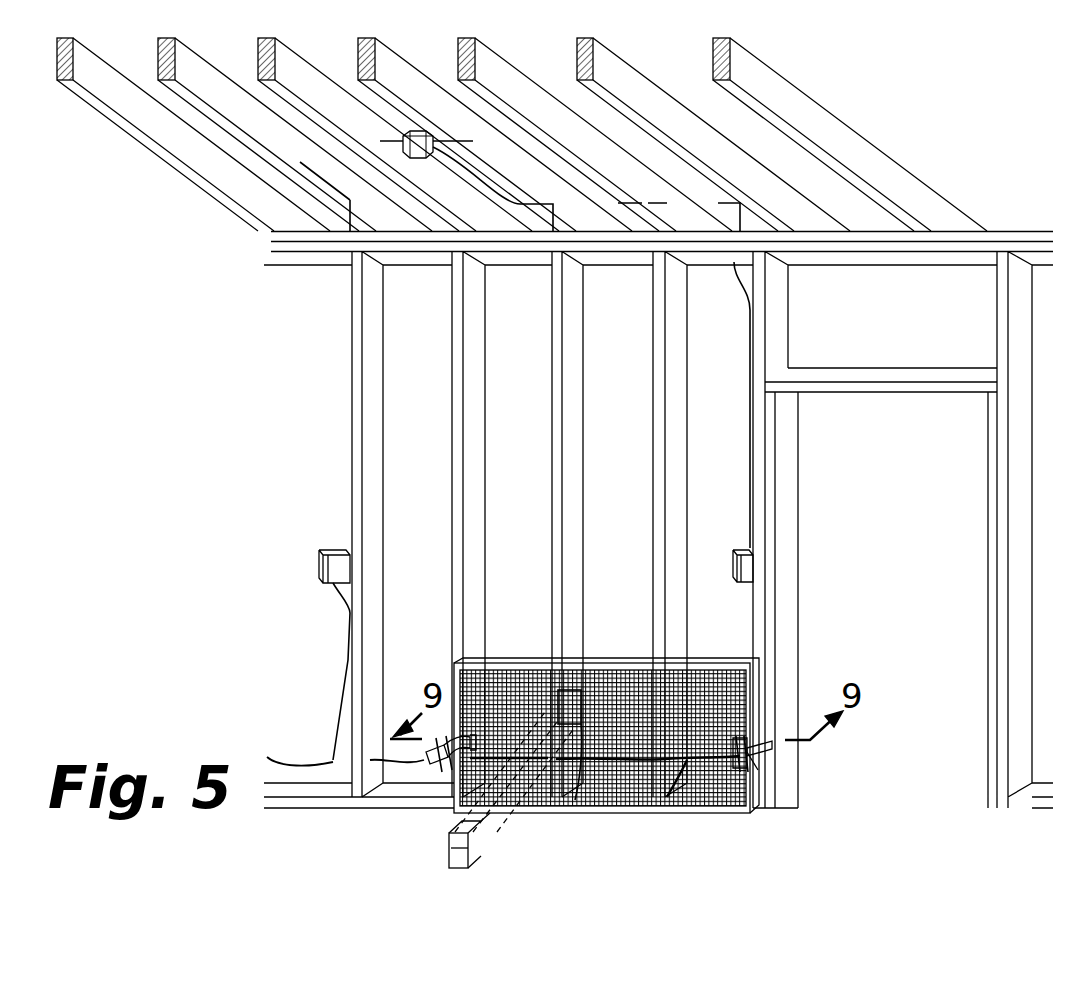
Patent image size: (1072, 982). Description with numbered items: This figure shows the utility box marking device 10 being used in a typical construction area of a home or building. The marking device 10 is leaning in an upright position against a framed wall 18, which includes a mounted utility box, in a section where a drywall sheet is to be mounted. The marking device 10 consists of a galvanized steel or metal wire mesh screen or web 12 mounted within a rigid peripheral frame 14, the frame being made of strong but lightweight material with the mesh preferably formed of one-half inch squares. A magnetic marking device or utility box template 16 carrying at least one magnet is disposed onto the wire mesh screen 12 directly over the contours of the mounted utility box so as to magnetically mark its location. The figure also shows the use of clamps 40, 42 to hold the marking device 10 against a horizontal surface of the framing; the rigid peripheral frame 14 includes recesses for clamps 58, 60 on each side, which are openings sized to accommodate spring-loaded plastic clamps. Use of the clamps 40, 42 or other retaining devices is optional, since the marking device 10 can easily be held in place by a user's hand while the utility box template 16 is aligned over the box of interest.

The utility box marking device 10 is at (738, 634).
The wire mesh screen or web 12 is at (712, 788).
The rigid peripheral frame 14 is at (752, 793).
The magnetic marking device or indicator or utility box template 16 is at (470, 850).
The framed wall 18 is at (352, 391).
The clamp 40 is at (757, 757).
The clamp 42 is at (424, 760).
The recess for clamp 58 is at (472, 742).
The recess for clamp 60 is at (737, 727).